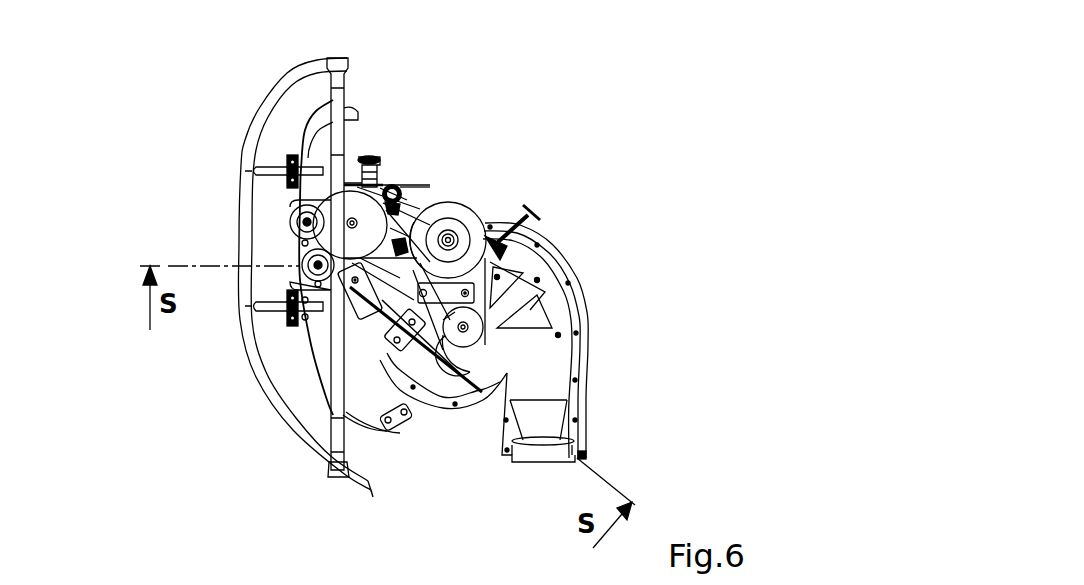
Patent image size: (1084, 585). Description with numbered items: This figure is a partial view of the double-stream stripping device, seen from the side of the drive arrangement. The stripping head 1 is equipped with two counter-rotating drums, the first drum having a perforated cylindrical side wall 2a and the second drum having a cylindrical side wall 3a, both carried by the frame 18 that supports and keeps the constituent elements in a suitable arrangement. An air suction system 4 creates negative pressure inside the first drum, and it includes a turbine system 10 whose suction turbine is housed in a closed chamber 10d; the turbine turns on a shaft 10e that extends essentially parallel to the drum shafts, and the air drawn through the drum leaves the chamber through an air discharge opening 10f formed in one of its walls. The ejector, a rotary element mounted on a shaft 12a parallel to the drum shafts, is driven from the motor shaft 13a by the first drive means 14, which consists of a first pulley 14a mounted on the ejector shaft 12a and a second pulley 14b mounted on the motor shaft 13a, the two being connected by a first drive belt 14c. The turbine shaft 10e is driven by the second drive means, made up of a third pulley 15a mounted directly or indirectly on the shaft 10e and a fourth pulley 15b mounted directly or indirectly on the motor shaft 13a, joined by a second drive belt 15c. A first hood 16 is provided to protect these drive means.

The stripping head 1 is at (198, 94).
The perforated cylindrical side wall 2a is at (315, 262).
The cylindrical side wall 3a is at (303, 220).
The air suction system 4 is at (592, 155).
The turbine system 10 is at (612, 291).
The closed chamber 10d is at (565, 276).
The shaft 10e is at (478, 345).
The air discharge opening 10f is at (528, 467).
The shaft 12a is at (380, 190).
The shaft 13a is at (451, 238).
The first drive means 14 is at (432, 225).
The first pulley 14a is at (352, 218).
The second pulley 14b is at (458, 233).
The first drive belt 14c is at (428, 190).
The third pulley 15a is at (478, 327).
The fourth pulley 15b is at (454, 207).
The second drive belt 15c is at (483, 296).
The first hood 16 is at (512, 254).
The frame 18 is at (366, 159).